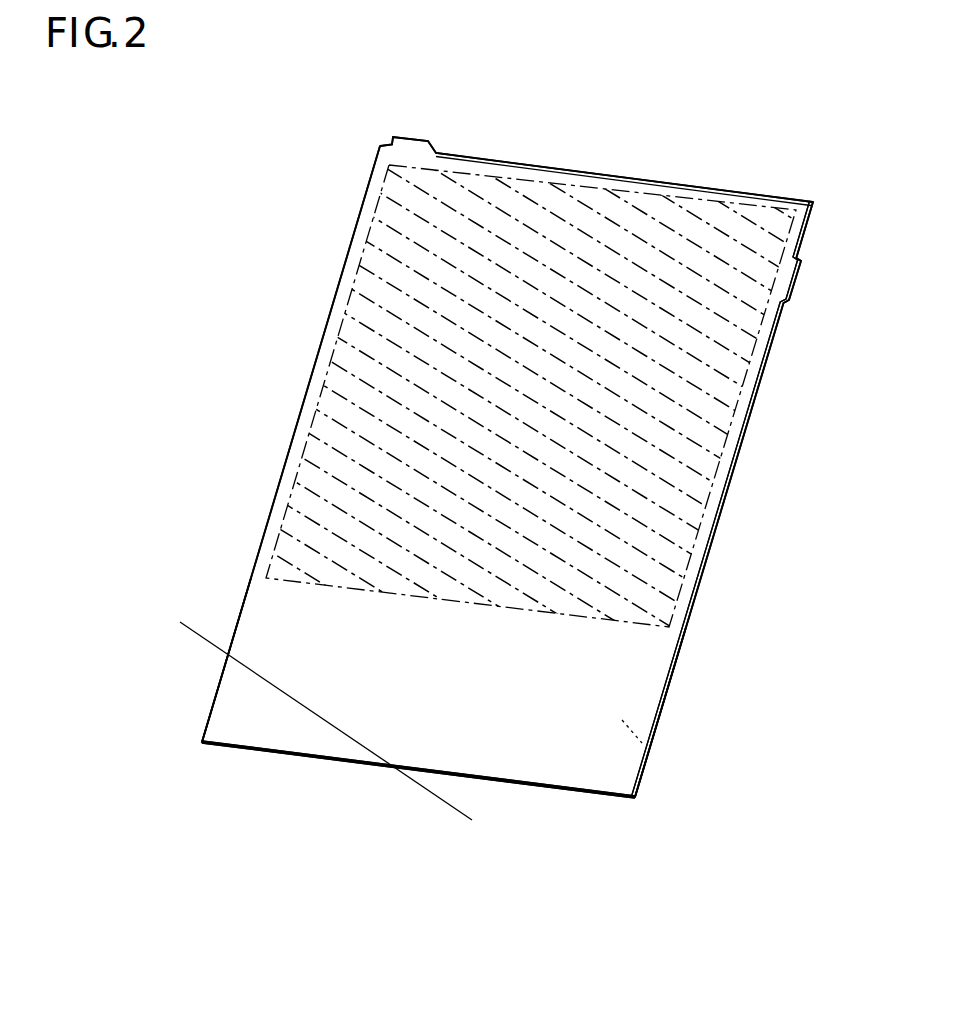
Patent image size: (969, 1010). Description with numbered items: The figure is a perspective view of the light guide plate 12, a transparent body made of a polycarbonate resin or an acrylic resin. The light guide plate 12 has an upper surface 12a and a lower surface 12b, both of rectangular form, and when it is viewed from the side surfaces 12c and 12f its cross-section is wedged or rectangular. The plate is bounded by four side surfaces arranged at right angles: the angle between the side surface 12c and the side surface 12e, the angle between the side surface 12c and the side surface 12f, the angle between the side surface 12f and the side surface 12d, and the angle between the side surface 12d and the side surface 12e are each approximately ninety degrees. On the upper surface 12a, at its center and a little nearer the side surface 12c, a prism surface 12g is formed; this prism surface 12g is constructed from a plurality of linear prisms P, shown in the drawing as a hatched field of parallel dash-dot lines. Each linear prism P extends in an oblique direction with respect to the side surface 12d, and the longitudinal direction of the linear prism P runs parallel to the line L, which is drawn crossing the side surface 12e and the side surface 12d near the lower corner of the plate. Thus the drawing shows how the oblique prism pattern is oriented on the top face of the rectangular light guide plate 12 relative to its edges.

The light guide plate 12 is at (322, 262).
The upper surface 12a is at (650, 660).
The lower surface 12b is at (647, 748).
The side surface 12c is at (753, 192).
The side surface 12d is at (562, 790).
The side surface 12e is at (282, 470).
The side surface 12f is at (718, 521).
The prism surface 12g is at (598, 213).
The linear prism P is at (723, 392).
The line L is at (200, 638).